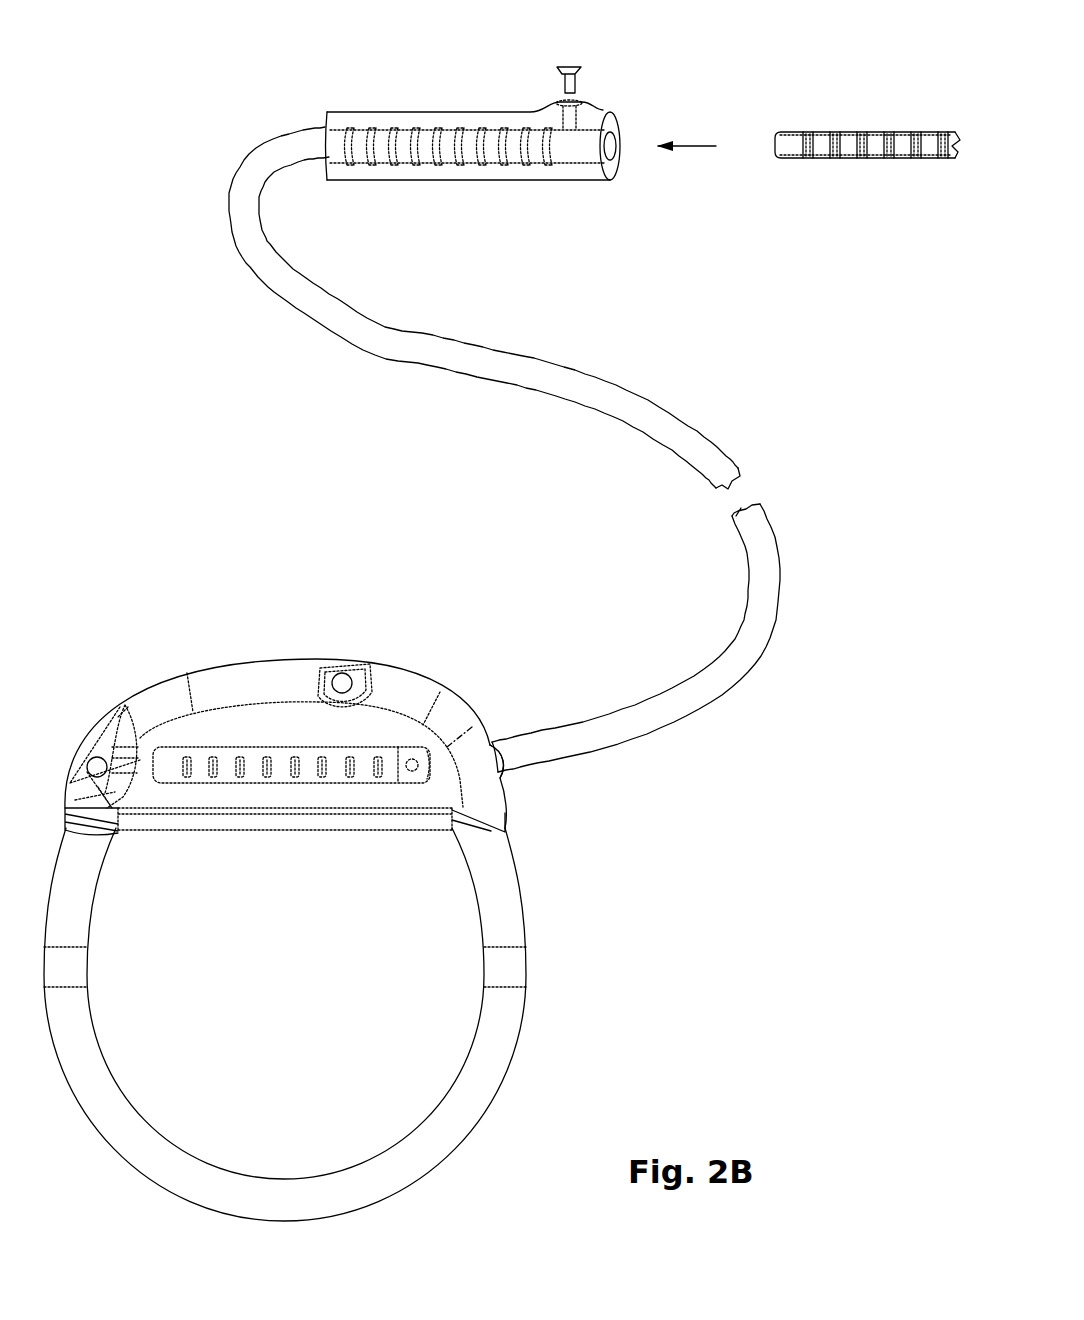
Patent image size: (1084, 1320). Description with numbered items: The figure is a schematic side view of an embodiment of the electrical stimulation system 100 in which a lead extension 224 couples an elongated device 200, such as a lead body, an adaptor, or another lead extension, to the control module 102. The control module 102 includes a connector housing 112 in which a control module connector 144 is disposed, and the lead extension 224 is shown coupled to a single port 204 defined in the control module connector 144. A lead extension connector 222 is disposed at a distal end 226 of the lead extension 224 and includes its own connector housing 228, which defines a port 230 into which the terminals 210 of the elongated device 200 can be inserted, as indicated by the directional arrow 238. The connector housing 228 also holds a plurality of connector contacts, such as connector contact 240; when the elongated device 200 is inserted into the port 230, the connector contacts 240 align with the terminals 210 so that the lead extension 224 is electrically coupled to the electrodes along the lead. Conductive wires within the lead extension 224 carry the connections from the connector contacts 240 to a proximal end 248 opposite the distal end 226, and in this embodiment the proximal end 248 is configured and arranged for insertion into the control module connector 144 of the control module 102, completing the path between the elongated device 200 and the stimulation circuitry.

The electrical stimulation system 100 is at (731, 370).
The control module 102 is at (584, 974).
The connector housing 112 is at (136, 655).
The control module connector 144 is at (386, 750).
The elongated device 200 is at (833, 104).
The port 204 is at (500, 780).
The terminals 210 is at (950, 166).
The lead extension connector 222 is at (430, 112).
The lead extension 224 is at (602, 378).
The distal end 226 is at (317, 102).
The connector housing 228 is at (373, 128).
The port 230 is at (631, 168).
The directional arrow 238 is at (692, 146).
The connector contact 240 is at (487, 165).
The proximal end 248 is at (512, 717).